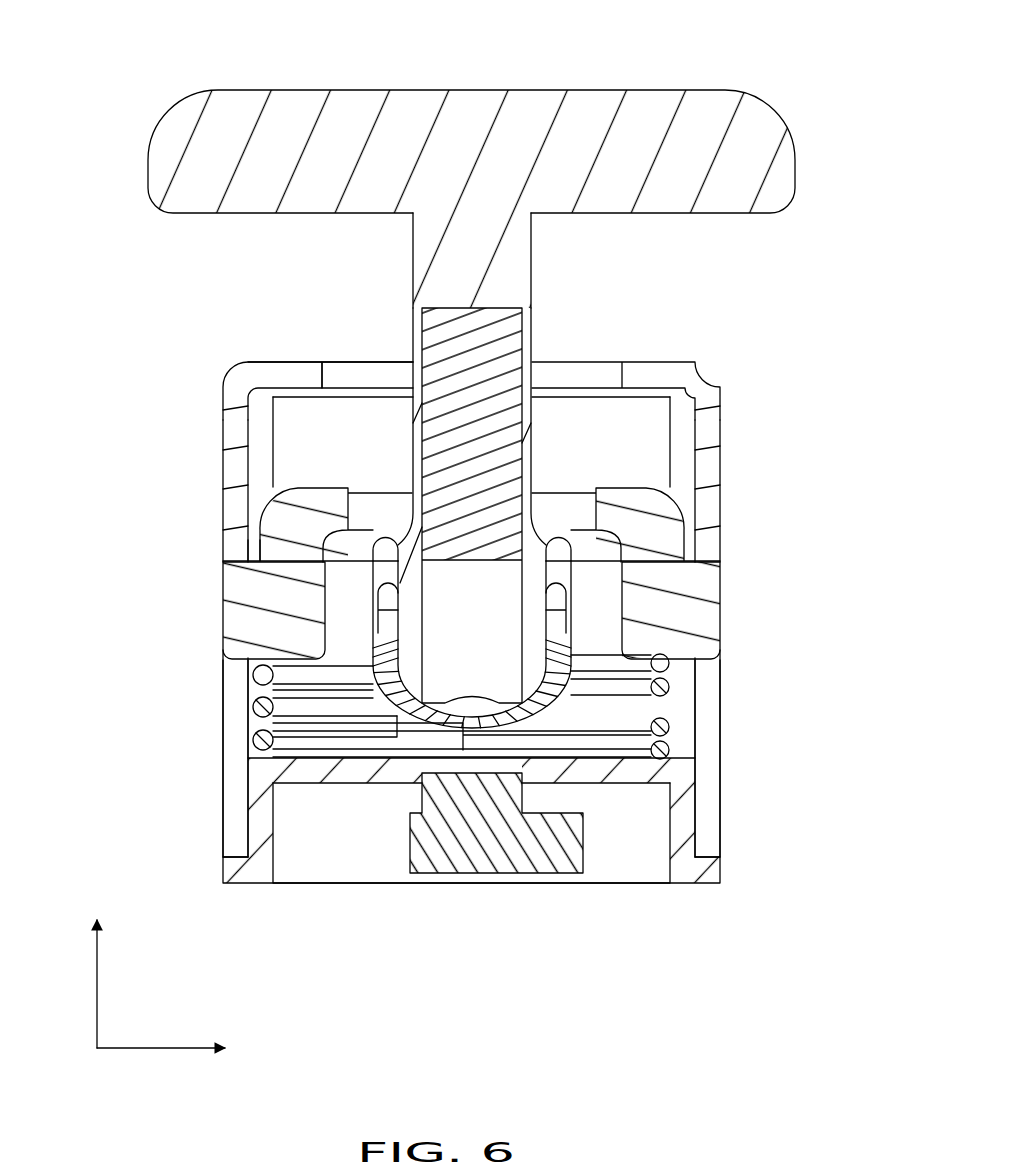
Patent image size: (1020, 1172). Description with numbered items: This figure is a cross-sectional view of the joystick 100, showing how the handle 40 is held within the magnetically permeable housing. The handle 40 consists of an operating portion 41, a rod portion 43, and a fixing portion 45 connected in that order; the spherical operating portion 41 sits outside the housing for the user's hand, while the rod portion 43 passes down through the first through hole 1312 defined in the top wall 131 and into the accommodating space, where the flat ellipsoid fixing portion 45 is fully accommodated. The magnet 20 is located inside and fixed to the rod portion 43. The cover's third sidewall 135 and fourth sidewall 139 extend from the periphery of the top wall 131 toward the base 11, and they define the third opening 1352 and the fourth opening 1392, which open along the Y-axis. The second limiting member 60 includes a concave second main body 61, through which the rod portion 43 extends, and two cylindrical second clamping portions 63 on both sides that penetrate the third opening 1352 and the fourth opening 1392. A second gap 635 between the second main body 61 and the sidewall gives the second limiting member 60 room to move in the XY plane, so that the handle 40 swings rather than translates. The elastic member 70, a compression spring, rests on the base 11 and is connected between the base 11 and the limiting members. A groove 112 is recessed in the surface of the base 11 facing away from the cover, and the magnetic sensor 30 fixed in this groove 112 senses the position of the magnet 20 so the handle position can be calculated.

The joystick 100 is at (340, 36).
The handle 40 is at (797, 245).
The operating portion 41 is at (665, 178).
The rod portion 43 is at (508, 272).
The fixing portion 45 is at (527, 605).
The magnet 20 is at (458, 344).
The top wall 131 is at (283, 378).
The first through hole 1312 is at (368, 370).
The fourth sidewall 139 is at (235, 496).
The third sidewall 135 is at (710, 488).
The fourth opening 1392 is at (235, 704).
The third opening 1352 is at (716, 753).
The second gap 635 is at (247, 552).
The second limiting member 60 is at (809, 548).
The second clamping portion 63 is at (700, 572).
The second main body 61 is at (630, 625).
The elastic member 70 is at (650, 715).
The base 11 is at (685, 808).
The groove 112 is at (634, 874).
The magnetic sensor 30 is at (485, 852).